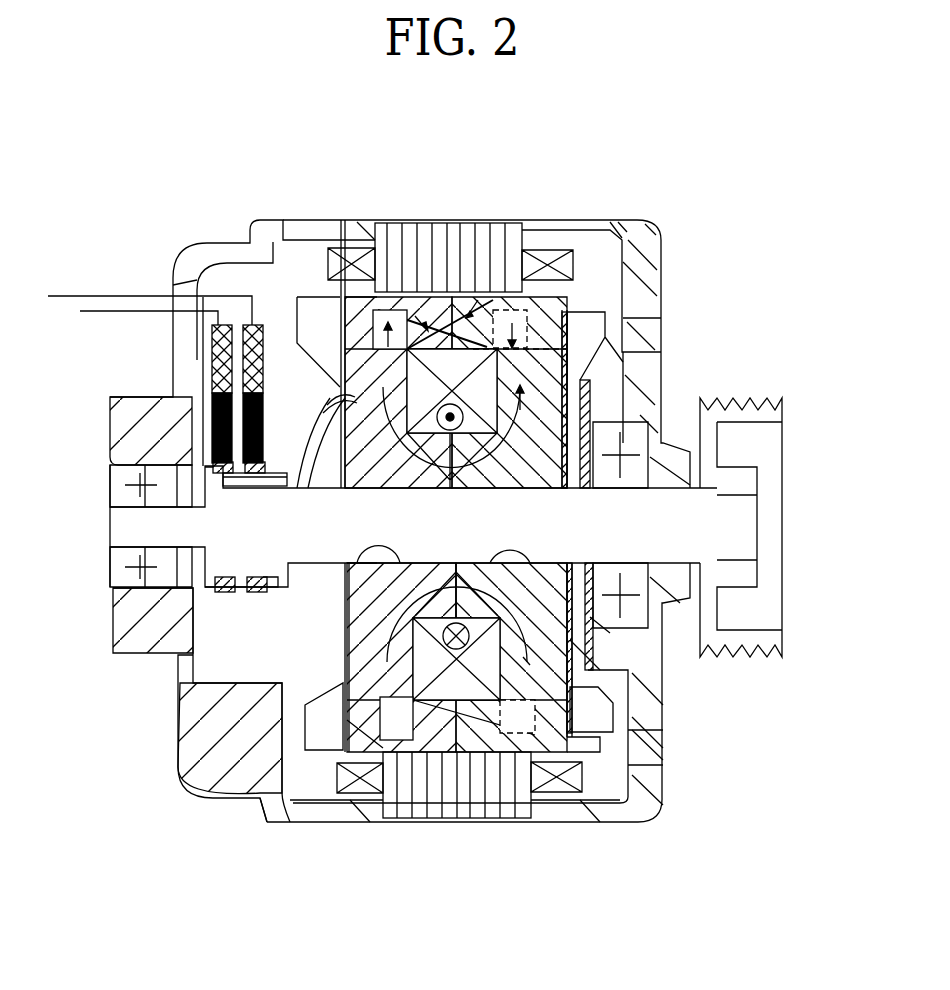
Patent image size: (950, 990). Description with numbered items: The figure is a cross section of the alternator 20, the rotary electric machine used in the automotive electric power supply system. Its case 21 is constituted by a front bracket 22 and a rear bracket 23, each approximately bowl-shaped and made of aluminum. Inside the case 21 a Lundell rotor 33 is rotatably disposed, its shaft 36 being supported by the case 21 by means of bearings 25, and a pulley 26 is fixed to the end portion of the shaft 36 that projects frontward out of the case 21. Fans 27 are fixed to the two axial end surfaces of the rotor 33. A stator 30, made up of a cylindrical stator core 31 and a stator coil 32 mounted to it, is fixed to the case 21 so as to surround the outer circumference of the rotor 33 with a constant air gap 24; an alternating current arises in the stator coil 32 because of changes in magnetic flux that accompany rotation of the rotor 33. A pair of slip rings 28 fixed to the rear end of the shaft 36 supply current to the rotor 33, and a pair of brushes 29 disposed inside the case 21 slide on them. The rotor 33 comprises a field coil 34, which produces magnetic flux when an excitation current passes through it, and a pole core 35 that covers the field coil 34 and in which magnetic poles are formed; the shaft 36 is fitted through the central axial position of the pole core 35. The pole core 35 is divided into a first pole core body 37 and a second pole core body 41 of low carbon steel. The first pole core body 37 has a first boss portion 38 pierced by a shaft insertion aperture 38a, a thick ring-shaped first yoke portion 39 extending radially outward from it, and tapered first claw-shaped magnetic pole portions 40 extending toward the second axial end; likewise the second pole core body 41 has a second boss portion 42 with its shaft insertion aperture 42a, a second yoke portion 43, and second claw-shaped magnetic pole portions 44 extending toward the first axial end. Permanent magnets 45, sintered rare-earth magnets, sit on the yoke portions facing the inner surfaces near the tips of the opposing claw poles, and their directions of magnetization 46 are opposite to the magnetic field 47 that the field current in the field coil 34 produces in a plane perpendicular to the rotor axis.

The alternator 20 is at (110, 135).
The case 21 is at (669, 234).
The front bracket 22 is at (667, 267).
The rear bracket 23 is at (182, 252).
The air gap 24 is at (380, 752).
The bearings 25 is at (122, 483).
The pulley 26 is at (760, 397).
The fans 27 is at (598, 335).
The slip rings 28 is at (212, 475).
The brushes 29 is at (215, 397).
The stator 30 is at (492, 866).
The stator core 31 is at (514, 805).
The stator coil 32 is at (561, 785).
The Lundell rotor 33 is at (560, 300).
The field coil 34 is at (500, 320).
The pole core 35 is at (500, 152).
The shaft 36 is at (707, 516).
The first pole core body 37 is at (468, 360).
The first boss portion 38 is at (562, 626).
The shaft insertion aperture 38a is at (562, 599).
The first yoke portion 39 is at (562, 667).
The first claw-shaped magnetic pole portions 40 is at (488, 740).
The second pole core body 41 is at (424, 310).
The second boss portion 42 is at (360, 608).
The shaft insertion aperture 42a is at (337, 585).
The second yoke portion 43 is at (255, 703).
The second claw-shaped magnetic pole portions 44 is at (430, 718).
The permanent magnets 45 is at (375, 332).
The directions of magnetization 46 is at (420, 322).
The magnetic field 47 is at (338, 392).